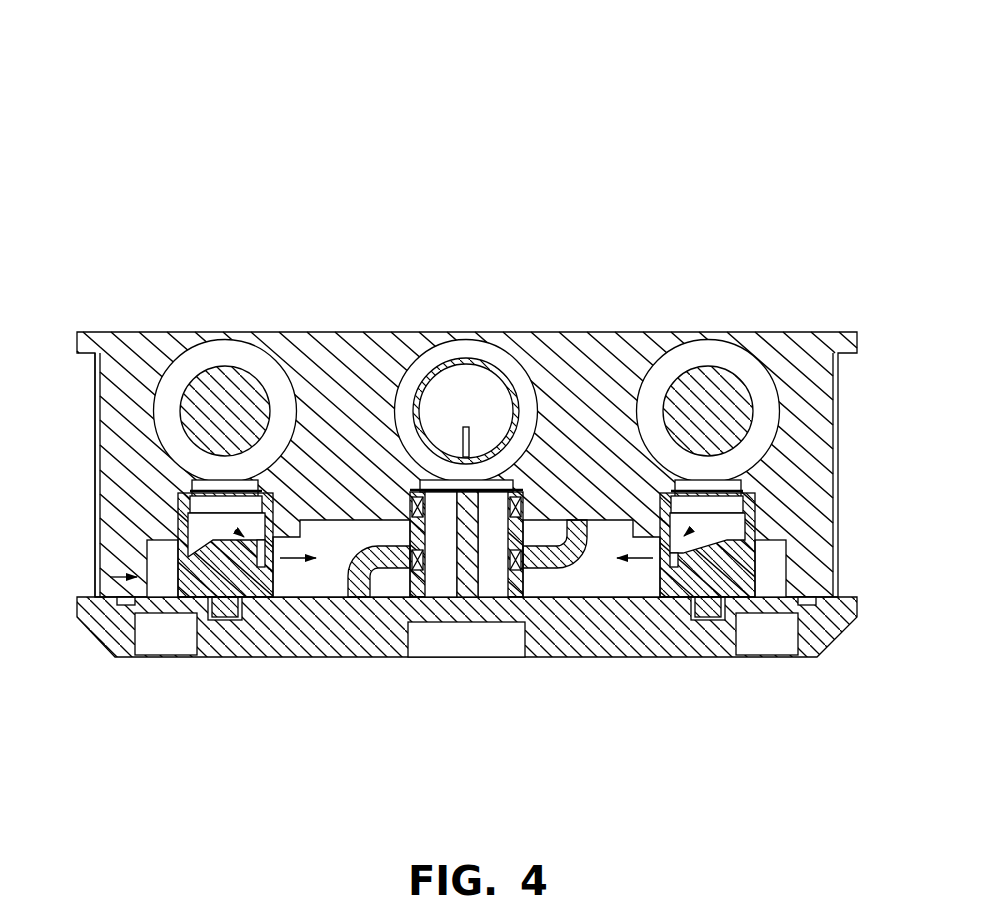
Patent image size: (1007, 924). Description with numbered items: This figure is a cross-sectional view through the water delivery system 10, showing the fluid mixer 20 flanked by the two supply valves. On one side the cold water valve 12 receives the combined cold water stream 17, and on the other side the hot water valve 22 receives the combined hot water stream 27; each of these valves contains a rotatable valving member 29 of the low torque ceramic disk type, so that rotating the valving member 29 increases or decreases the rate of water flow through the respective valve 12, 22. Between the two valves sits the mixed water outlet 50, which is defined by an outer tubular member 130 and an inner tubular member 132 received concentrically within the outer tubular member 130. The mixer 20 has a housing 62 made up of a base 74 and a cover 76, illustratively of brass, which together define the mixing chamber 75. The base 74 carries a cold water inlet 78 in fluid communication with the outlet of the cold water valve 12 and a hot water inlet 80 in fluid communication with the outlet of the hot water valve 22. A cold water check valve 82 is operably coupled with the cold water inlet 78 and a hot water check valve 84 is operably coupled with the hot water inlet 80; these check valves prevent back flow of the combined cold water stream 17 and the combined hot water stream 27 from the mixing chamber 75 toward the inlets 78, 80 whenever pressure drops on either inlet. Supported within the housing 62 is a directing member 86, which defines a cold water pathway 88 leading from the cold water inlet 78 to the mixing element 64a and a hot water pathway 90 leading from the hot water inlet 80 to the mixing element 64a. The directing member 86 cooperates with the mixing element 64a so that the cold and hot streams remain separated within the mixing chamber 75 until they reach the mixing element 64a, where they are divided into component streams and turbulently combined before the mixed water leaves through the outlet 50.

The water delivery system 10 is at (799, 150).
The cold water valve 12 is at (732, 380).
The combined cold water stream 17 is at (692, 548).
The fluid mixer 20 is at (822, 322).
The hot water valve 22 is at (240, 378).
The combined hot water stream 27 is at (248, 560).
The rotatable valving member 29 is at (203, 385).
The mixed water outlet 50 is at (470, 338).
The housing 62 is at (607, 327).
The mixing element 64a is at (469, 604).
The base 74 is at (94, 331).
The mixing chamber 75 is at (110, 577).
The cover 76 is at (122, 658).
The cold water inlet 78 is at (752, 478).
The hot water inlet 80 is at (183, 478).
The cold water check valve 82 is at (757, 548).
The hot water check valve 84 is at (178, 548).
The directing member 86 is at (342, 625).
The cold water pathway 88 is at (600, 594).
The hot water pathway 90 is at (297, 592).
The outer tubular member 130 is at (420, 360).
The inner tubular member 132 is at (500, 375).